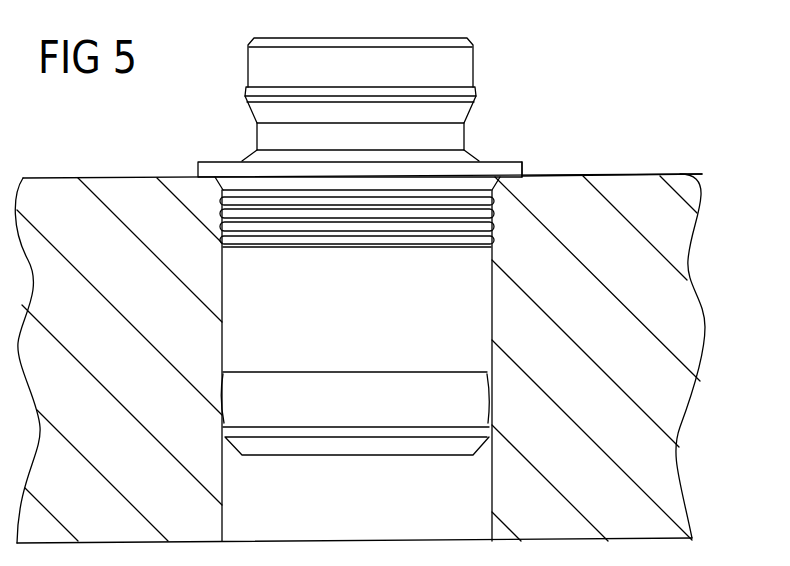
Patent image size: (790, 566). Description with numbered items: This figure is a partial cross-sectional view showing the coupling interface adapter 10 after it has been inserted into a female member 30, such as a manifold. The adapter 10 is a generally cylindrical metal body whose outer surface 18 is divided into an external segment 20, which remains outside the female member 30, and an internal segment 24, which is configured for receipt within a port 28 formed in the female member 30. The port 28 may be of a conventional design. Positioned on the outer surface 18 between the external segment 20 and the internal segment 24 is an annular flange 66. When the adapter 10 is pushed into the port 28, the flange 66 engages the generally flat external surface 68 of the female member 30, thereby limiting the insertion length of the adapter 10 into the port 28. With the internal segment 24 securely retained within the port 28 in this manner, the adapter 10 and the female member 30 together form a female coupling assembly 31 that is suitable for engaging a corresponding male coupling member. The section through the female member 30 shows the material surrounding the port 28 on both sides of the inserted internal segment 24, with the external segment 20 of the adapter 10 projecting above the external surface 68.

The coupling interface adapter 10 is at (406, 84).
The external segment 20 is at (258, 60).
The female coupling assembly 31 is at (539, 103).
The internal segment 24 is at (242, 183).
The annular flange 66 is at (522, 160).
The external surface 68 is at (632, 175).
The female member 30 is at (709, 202).
The outer surface 18 is at (492, 287).
The port 28 is at (375, 501).